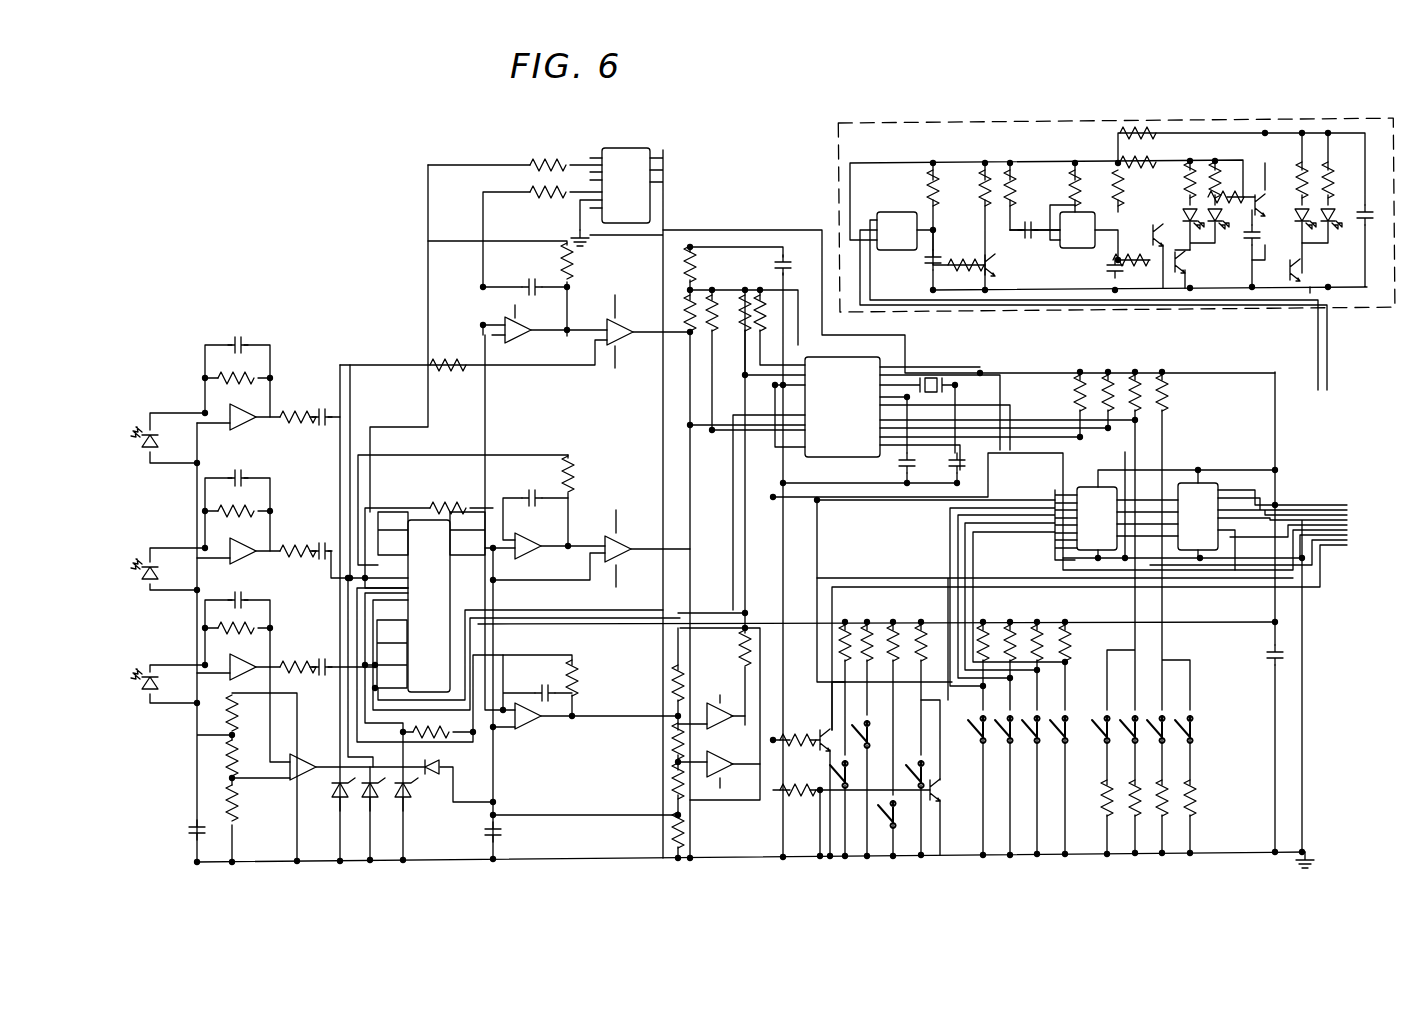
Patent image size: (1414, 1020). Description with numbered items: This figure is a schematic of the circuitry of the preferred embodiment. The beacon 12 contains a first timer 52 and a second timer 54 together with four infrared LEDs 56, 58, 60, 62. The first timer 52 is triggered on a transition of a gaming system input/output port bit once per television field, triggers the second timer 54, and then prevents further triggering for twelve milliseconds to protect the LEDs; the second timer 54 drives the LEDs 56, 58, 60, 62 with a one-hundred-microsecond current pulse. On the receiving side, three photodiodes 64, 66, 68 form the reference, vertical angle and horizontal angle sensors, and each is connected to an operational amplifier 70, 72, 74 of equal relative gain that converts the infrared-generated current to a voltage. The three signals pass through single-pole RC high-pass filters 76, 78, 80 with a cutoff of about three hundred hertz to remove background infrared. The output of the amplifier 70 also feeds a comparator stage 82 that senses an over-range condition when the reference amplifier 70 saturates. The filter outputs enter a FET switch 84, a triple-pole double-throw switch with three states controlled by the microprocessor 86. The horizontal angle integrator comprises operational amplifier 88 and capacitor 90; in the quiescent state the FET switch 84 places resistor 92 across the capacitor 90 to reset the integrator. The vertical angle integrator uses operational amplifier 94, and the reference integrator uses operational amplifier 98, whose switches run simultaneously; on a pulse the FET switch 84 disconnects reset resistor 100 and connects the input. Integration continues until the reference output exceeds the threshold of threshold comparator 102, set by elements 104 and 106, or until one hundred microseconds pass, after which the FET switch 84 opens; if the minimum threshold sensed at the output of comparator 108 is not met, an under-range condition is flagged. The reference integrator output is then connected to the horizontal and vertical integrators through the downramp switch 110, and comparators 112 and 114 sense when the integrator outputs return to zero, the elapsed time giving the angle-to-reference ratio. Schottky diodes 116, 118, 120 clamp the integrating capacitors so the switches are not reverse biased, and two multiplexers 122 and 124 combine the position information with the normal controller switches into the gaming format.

The beacon 12 is at (1116, 233).
The first timer 52 is at (897, 231).
The second timer 54 is at (1077, 230).
The infrared LED 56 is at (1346, 218).
The infrared LED 58 is at (1309, 212).
The infrared LED 60 is at (1223, 220).
The infrared LED 62 is at (1182, 210).
The photodiode 64 is at (150, 703).
The photodiode 66 is at (150, 590).
The photodiode 68 is at (150, 463).
The operational amplifier 70 is at (258, 644).
The operational amplifier 72 is at (248, 558).
The operational amplifier 74 is at (248, 424).
The high-pass filter 76 is at (314, 654).
The high-pass filter 78 is at (314, 532).
The high-pass filter 80 is at (311, 399).
The comparator stage 82 is at (297, 772).
The FET switch 84 is at (513, 466).
The microprocessor 86 is at (1005, 545).
The operational amplifier 88 is at (525, 336).
The capacitor 90 is at (536, 280).
The resistor 92 is at (575, 262).
The operational amplifier 94 is at (540, 506).
The operational amplifier 98 is at (530, 722).
The reset resistor 100 is at (594, 467).
The threshold comparator 102 is at (726, 724).
The threshold-setting element 104 is at (683, 683).
The threshold-setting element 106 is at (672, 735).
The minimum threshold comparator 108 is at (726, 772).
The downramp switch 110 is at (545, 503).
The comparator 112 is at (628, 340).
The comparator 114 is at (630, 525).
The Schottky diode 116 is at (336, 812).
The Schottky diode 118 is at (368, 812).
The Schottky diode 120 is at (410, 812).
The multiplexer 122 is at (1082, 585).
The multiplexer 124 is at (1236, 612).